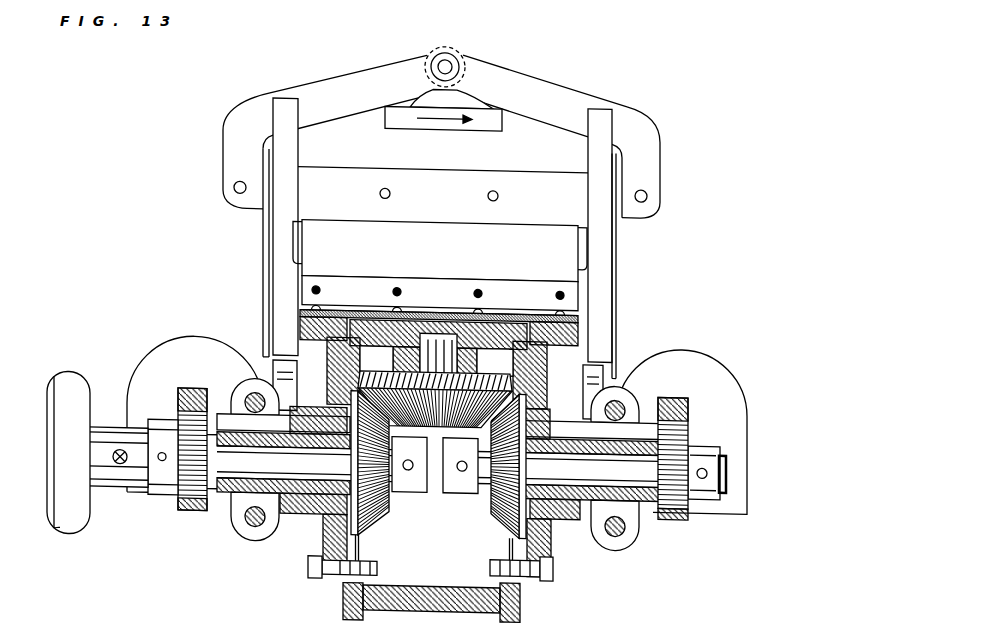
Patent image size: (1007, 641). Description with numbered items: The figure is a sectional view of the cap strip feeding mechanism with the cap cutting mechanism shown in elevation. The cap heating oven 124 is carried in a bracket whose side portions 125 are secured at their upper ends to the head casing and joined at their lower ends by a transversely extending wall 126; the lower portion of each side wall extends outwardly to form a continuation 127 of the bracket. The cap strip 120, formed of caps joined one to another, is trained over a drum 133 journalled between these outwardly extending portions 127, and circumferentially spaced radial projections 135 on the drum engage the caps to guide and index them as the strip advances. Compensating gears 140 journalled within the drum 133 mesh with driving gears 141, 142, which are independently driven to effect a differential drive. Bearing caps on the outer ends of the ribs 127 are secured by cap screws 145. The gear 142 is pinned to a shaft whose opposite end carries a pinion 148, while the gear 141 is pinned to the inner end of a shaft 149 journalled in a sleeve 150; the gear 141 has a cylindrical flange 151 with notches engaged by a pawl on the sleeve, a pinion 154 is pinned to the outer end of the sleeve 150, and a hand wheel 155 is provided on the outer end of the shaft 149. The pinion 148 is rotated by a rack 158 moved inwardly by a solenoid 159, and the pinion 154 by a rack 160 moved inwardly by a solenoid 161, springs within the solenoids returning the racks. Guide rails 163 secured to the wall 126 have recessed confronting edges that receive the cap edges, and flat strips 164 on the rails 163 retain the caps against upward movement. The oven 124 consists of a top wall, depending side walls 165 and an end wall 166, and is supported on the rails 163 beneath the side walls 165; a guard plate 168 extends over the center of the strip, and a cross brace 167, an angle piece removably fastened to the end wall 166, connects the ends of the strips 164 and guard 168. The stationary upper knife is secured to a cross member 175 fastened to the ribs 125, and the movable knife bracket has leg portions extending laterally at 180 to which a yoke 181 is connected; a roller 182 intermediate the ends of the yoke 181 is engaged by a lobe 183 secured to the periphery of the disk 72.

The disk 72 is at (487, 112).
The cap strip 120 is at (445, 305).
The cap heating oven 124 is at (440, 251).
The side portions 125 is at (293, 146).
The transversely extending wall 126 is at (300, 385).
The continuation of the bracket 127 is at (263, 352).
The drum 133 is at (445, 598).
The radial projections 135 is at (355, 609).
The compensating gears 140 is at (419, 414).
The driving gear 141 is at (380, 512).
The driving gear 142 is at (487, 516).
The cap screws 145 is at (623, 389).
The pinion 148 is at (677, 507).
The shaft 149 is at (243, 472).
The sleeve 150 is at (305, 526).
The cylindrical flange 151 is at (313, 550).
The pinion 154 is at (187, 504).
The hand wheel 155 is at (63, 530).
The rack 158 is at (677, 395).
The solenoid 159 is at (683, 336).
The rack 160 is at (190, 393).
The solenoid 161 is at (171, 337).
The guide rails 163 is at (298, 324).
The flat strips 164 is at (327, 305).
The side walls 165 is at (300, 236).
The end wall 166 is at (440, 251).
The cross brace 167 is at (507, 276).
The guard plate 168 is at (417, 304).
The cross member 175 is at (397, 168).
The laterally extending portions 180 is at (263, 202).
The yoke 181 is at (577, 85).
The roller 182 is at (452, 42).
The lobe 183 is at (452, 92).